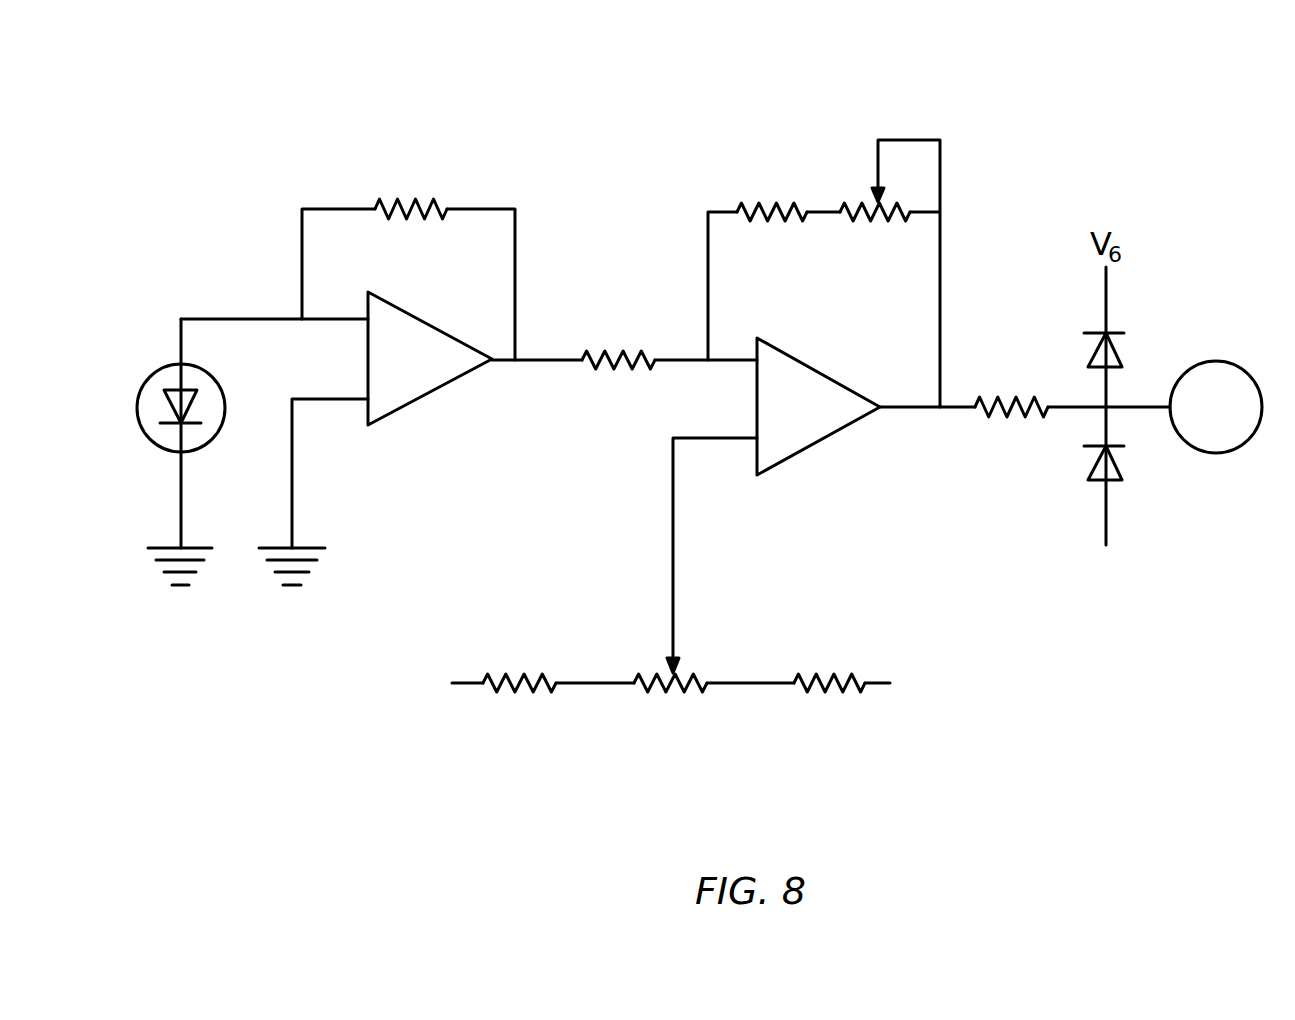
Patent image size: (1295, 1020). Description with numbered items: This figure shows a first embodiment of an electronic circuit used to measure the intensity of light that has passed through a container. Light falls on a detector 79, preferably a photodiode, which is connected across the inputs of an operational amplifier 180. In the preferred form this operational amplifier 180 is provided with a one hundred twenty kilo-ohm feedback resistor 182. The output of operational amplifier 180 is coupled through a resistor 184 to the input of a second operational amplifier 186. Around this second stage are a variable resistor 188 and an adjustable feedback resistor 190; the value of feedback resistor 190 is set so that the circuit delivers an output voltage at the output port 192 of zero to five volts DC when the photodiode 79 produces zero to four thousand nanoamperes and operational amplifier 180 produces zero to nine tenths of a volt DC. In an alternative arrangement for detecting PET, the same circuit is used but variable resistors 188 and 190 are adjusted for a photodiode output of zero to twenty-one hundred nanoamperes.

The detector 79 is at (152, 373).
The operational amplifier 180 is at (425, 395).
The feedback resistor 182 is at (418, 202).
The resistor 184 is at (628, 355).
The operational amplifier 186 is at (820, 371).
The variable resistor 188 is at (828, 188).
The feedback resistor 190 is at (681, 713).
The output port 192 is at (1222, 362).